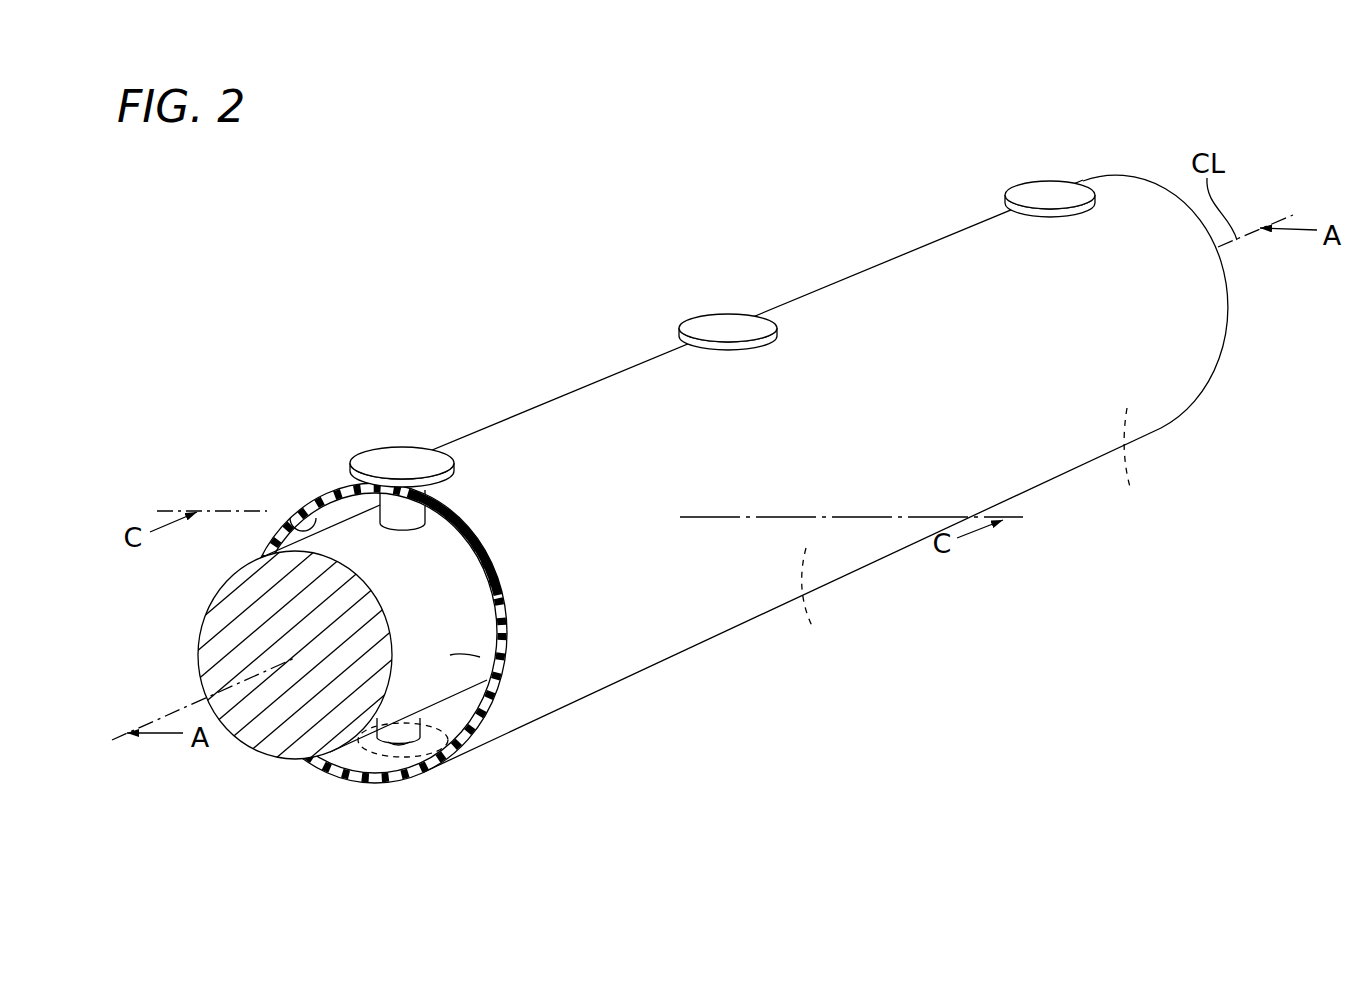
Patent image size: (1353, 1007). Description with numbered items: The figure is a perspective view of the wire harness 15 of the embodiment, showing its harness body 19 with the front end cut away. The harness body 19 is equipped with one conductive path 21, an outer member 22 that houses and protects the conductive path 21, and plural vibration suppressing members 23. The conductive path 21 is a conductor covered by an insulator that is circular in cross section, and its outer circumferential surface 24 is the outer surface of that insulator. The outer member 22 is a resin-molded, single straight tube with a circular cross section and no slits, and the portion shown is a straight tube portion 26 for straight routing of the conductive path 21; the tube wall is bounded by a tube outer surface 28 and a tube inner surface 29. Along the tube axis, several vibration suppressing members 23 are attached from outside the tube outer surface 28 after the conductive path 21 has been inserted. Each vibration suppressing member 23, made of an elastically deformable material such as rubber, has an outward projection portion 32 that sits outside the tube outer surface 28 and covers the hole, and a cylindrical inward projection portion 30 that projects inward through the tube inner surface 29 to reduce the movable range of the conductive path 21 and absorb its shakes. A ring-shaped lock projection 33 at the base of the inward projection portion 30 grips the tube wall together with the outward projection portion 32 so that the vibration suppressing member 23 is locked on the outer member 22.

The wire harness 15 is at (340, 222).
The harness body 19 is at (342, 303).
The conductive path 21 is at (243, 635).
The outer member 22 is at (873, 266).
The vibration suppressing member 23 is at (365, 450).
The outer circumferential surface 24 is at (450, 655).
The straight tube portion 26 is at (1187, 362).
The tube outer surface 28 is at (525, 430).
The tube inner surface 29 is at (287, 515).
The inward projection portion 30 is at (385, 525).
The outward projection portion 32 is at (402, 460).
The lock projection 33 is at (400, 742).